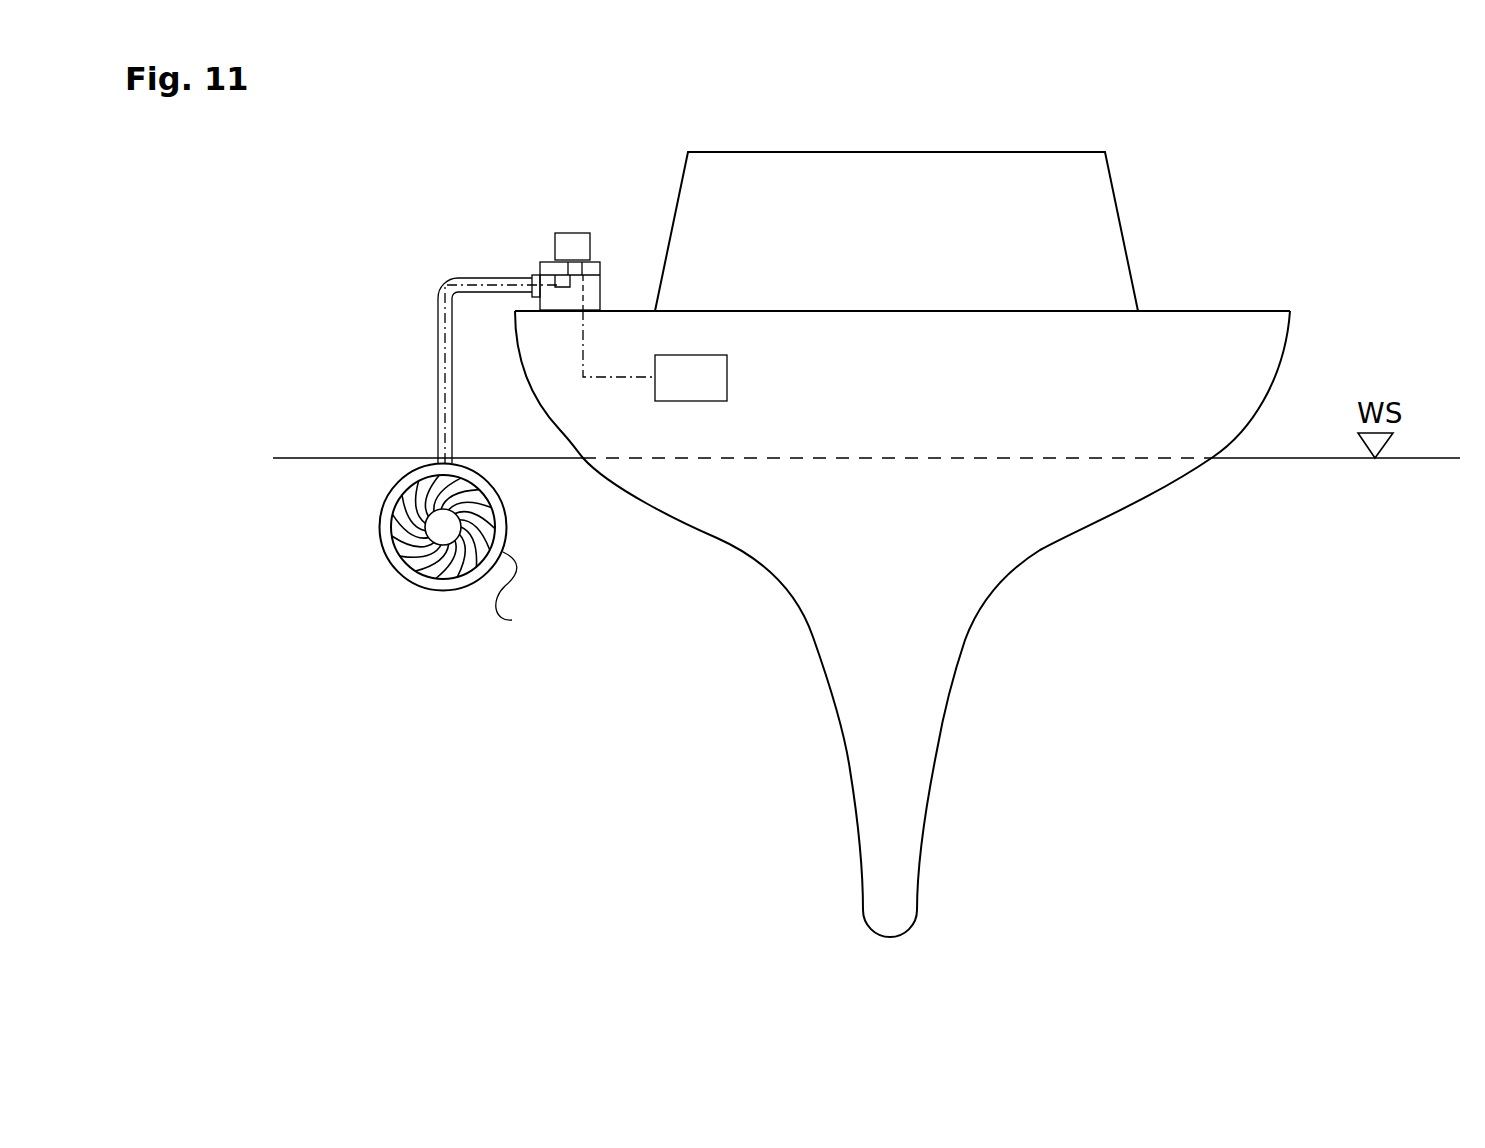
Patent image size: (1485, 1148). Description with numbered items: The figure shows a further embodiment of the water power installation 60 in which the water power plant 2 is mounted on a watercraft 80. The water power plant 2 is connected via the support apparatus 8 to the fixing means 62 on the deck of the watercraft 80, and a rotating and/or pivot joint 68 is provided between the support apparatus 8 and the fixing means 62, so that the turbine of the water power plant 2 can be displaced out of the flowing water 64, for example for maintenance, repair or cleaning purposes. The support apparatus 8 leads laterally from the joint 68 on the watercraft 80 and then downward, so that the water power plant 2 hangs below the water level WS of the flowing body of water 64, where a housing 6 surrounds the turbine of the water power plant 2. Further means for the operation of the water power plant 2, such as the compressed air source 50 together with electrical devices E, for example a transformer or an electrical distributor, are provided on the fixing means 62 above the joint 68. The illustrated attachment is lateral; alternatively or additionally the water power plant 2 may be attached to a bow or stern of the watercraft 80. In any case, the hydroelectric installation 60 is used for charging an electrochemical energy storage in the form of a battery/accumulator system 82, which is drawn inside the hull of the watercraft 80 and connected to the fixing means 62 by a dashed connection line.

The water power plant 2 is at (393, 574).
The turbine housing 6 is at (515, 594).
The support apparatus 8 is at (438, 413).
The compressed air source 50 is at (570, 238).
The hydroelectric installation 60 is at (355, 293).
The fixing means 62 is at (605, 308).
The flowing body of water 64 is at (298, 456).
The rotating and/or pivot joint 68 is at (537, 272).
The watercraft 80 is at (1133, 285).
The battery/accumulator system 82 is at (693, 395).